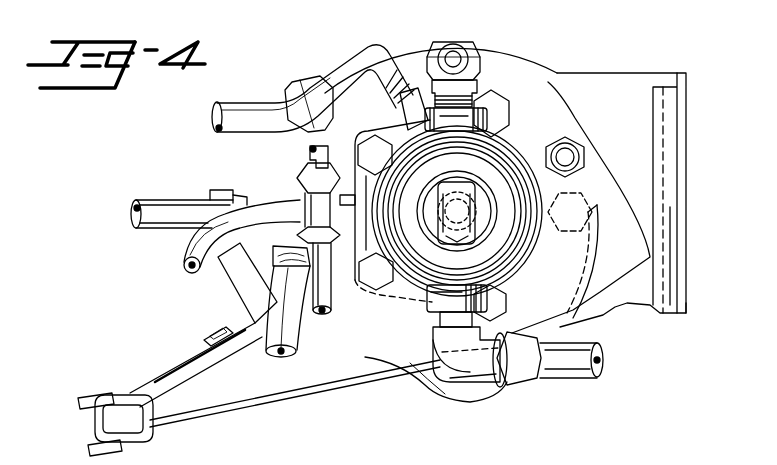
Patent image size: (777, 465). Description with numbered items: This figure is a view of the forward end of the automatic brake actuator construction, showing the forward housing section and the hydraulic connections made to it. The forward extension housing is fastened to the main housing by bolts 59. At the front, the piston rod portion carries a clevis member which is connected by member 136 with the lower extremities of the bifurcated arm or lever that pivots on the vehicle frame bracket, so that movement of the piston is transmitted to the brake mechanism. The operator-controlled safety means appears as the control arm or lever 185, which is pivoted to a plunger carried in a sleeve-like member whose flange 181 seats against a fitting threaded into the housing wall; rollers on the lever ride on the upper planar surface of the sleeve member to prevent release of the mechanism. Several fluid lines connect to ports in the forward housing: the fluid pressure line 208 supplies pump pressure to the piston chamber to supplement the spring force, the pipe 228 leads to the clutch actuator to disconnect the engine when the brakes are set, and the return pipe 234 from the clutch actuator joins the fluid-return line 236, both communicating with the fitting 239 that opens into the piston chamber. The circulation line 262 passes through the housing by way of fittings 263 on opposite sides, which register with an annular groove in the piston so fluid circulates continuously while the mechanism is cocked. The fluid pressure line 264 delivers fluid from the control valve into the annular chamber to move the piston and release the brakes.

The bolts 59 is at (490, 107).
The member 136 is at (467, 183).
The flange 181 is at (248, 288).
The control arm or lever 185 is at (150, 382).
The fluid line or pipe 208 is at (175, 207).
The fluid line or pipe 228 is at (185, 255).
The pipe 234 is at (310, 153).
The fluid-return line or pipe 236 is at (328, 310).
The fitting 239 is at (313, 192).
The fluid line 262 is at (458, 48).
The fittings 263 is at (443, 40).
The fluid pressure line or pipe 264 is at (343, 78).